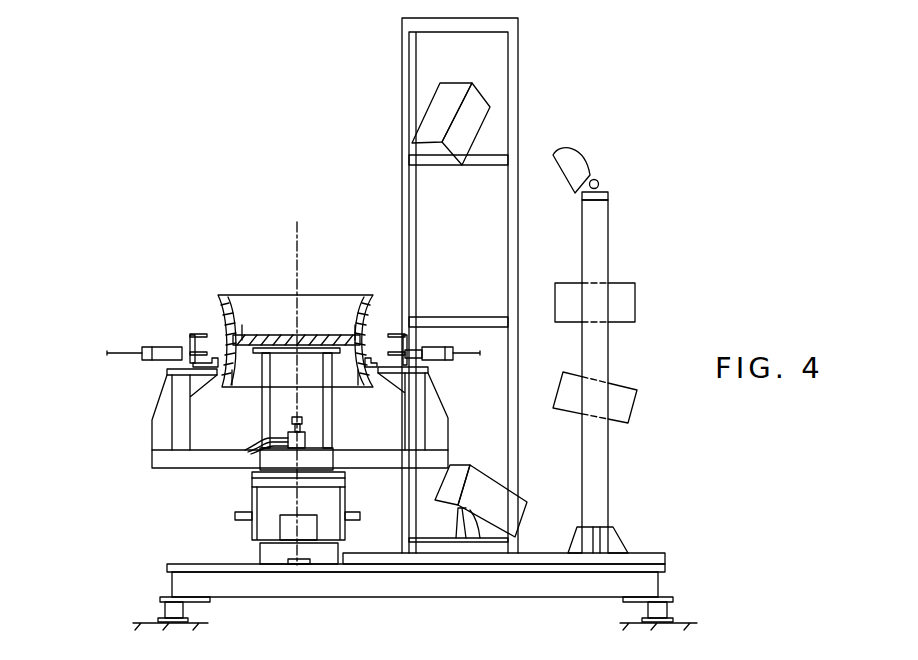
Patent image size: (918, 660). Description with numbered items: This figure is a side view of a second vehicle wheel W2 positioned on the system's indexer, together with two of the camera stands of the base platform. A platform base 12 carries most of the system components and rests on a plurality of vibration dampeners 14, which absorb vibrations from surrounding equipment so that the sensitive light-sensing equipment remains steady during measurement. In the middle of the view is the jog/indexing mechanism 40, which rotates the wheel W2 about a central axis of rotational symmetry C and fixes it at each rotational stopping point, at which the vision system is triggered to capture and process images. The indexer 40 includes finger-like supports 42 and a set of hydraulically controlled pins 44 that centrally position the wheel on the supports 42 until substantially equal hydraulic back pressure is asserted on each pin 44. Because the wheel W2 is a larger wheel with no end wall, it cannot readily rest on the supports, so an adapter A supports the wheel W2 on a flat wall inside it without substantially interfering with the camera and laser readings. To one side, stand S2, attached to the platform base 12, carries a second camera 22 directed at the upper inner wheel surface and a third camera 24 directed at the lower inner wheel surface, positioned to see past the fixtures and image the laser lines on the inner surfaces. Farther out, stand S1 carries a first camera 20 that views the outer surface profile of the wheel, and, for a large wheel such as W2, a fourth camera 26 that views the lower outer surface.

The platform base 12 is at (192, 563).
The vibration dampeners 14 is at (163, 608).
The first camera 20 is at (635, 292).
The second camera 22 is at (430, 107).
The third camera 24 is at (458, 464).
The fourth camera 26 is at (630, 425).
The jog/indexing mechanism 40 is at (147, 431).
The finger-like supports 42 is at (217, 338).
The hydraulically controlled pins 44 is at (188, 342).
The adapter A is at (333, 403).
The central axis of rotational symmetry C is at (294, 381).
The second vehicle wheel W2 is at (268, 293).
The first camera stand S1 is at (609, 210).
The second camera stand S2 is at (518, 107).